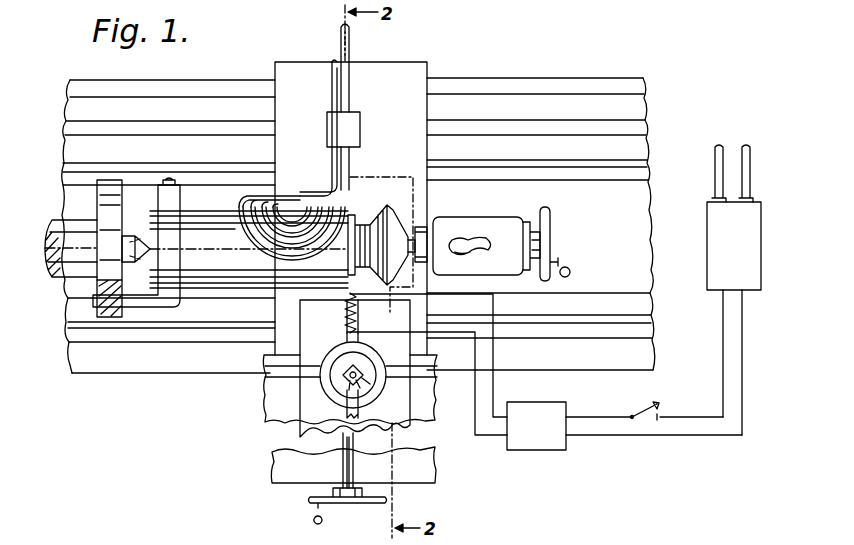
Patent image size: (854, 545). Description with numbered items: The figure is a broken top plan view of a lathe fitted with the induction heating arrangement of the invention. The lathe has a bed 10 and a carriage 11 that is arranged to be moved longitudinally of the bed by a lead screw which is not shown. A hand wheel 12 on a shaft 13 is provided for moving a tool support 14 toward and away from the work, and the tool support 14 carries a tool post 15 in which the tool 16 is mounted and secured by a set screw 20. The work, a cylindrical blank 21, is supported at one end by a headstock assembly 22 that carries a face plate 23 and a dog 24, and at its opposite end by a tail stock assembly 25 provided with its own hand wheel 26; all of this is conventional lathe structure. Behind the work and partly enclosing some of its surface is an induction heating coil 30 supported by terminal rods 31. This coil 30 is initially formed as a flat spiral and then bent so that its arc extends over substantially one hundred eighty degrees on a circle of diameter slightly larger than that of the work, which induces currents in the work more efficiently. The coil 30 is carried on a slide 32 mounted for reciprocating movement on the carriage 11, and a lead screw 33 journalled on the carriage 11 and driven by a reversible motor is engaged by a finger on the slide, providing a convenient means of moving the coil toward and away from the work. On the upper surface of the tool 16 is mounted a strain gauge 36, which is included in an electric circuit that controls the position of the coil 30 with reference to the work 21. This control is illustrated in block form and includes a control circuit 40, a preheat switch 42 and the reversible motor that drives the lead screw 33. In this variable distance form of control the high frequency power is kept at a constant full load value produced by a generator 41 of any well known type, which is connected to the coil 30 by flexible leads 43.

The bed 10 is at (655, 186).
The carriage 11 is at (400, 63).
The hand wheel 12 is at (376, 503).
The shaft 13 is at (345, 452).
The tool support 14 is at (300, 406).
The tool post 15 is at (380, 364).
The tool 16 is at (345, 320).
The set screw 20 is at (364, 386).
The work 21 is at (218, 210).
The headstock assembly 22 is at (46, 268).
The face plate 23 is at (97, 212).
The dog 24 is at (172, 298).
The tail stock assembly 25 is at (504, 213).
The hand wheel 26 is at (551, 225).
The induction heating coil 30 is at (306, 200).
The terminal rods 31 is at (352, 168).
The slide 32 is at (361, 131).
The lead screw 33 is at (341, 46).
The strain gauge 36 is at (358, 310).
The control circuit 40 is at (510, 450).
The generator 41 is at (758, 266).
The preheat switch 42 is at (640, 412).
The flexible leads 43 is at (748, 192).